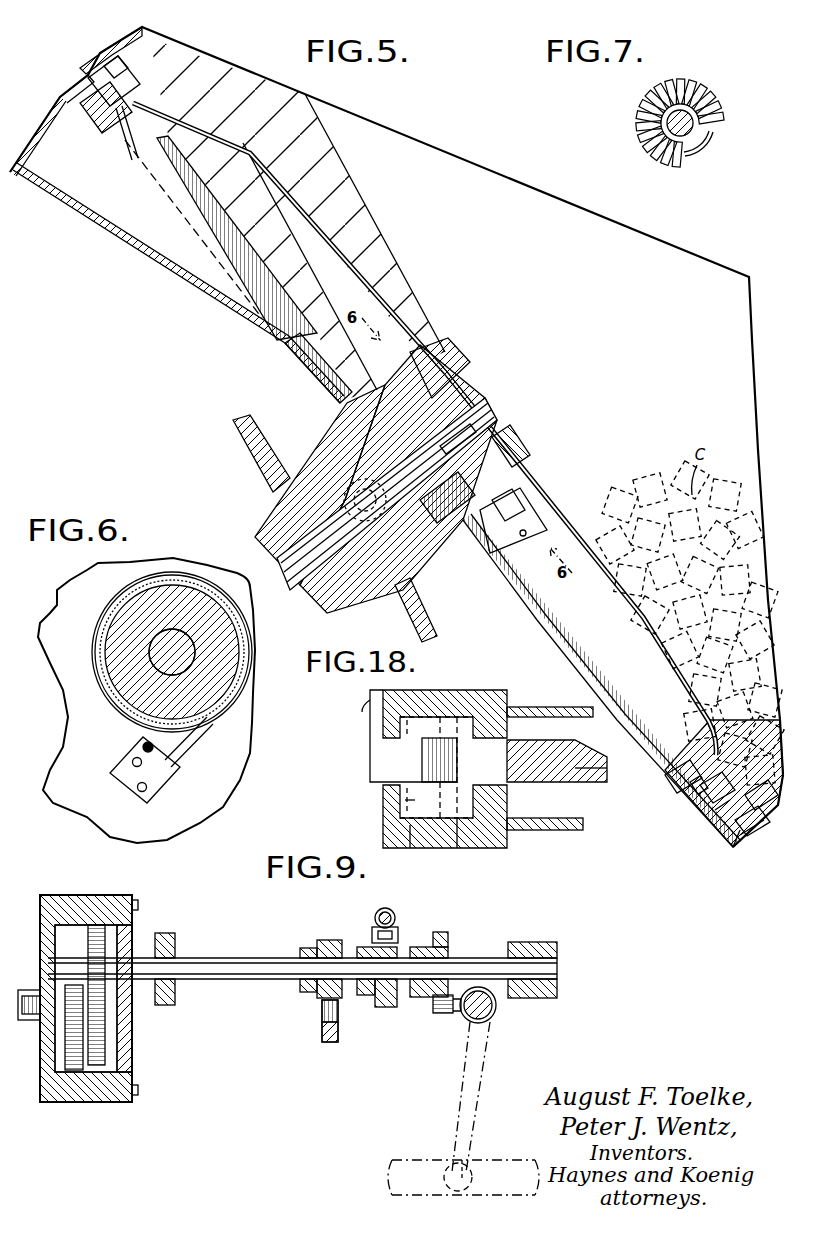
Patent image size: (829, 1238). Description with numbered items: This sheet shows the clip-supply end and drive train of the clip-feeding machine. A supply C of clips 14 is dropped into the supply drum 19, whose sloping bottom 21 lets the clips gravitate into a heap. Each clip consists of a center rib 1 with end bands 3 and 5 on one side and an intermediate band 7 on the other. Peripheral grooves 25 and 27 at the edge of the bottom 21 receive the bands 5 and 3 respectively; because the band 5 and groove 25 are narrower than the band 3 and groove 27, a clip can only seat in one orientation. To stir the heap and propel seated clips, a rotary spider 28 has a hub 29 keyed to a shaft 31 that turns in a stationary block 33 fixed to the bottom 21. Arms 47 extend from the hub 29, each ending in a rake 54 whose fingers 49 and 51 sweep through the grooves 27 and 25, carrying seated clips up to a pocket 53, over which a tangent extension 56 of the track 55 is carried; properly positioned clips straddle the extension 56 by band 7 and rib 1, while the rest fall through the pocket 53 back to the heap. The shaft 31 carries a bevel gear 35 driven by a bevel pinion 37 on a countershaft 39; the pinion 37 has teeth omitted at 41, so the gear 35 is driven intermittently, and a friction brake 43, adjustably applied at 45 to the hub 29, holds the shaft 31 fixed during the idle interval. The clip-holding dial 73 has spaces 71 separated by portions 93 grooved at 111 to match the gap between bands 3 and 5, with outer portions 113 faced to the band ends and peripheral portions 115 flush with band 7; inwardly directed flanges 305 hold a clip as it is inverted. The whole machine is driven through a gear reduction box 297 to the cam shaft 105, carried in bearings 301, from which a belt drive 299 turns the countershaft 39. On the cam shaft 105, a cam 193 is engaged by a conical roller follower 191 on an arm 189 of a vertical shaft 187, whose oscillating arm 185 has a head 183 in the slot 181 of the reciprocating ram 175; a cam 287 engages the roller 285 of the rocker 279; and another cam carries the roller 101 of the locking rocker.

In FIG. 5, the center rib 1 is at (762, 830).
In FIG. 18, the center rib 1 is at (460, 840).
In FIG. 5, the end band 3 is at (690, 790).
In FIG. 18, the end band 3 is at (372, 706).
In FIG. 5, the end band 5 is at (755, 832).
In FIG. 18, the end band 5 is at (410, 835).
In FIG. 5, the intermediate band 7 is at (765, 812).
In FIG. 18, the intermediate band 7 is at (507, 798).
In FIG. 5, the clips 14 is at (738, 852).
In FIG. 18, the clips 14 is at (415, 805).
In FIG. 5, the supply drum 19 is at (628, 246).
In FIG. 5, the sloping bottom 21 is at (548, 640).
In FIG. 5, the groove 25 is at (104, 136).
In FIG. 5, the groove 27 is at (80, 92).
In FIG. 5, the rotary spider 28 is at (415, 335).
In FIG. 5, the hub 29 is at (505, 440).
In FIG. 6, the hub 29 is at (120, 657).
In FIG. 5, the shaft 31 is at (478, 418).
In FIG. 6, the shaft 31 is at (157, 640).
In FIG. 5, the stationary block 33 is at (420, 558).
In FIG. 5, the bevel gear 35 is at (240, 420).
In FIG. 5, the bevel pinion 37 is at (320, 450).
In FIG. 7, the bevel pinion 37 is at (690, 82).
In FIG. 5, the countershaft 39 is at (357, 512).
In FIG. 7, the countershaft 39 is at (668, 124).
In FIG. 5, the omitted teeth 41 is at (365, 500).
In FIG. 7, the omitted teeth 41 is at (709, 160).
In FIG. 6, the friction brake 43 is at (167, 575).
In FIG. 5, the brake adjustment 45 is at (500, 510).
In FIG. 6, the brake adjustment 45 is at (170, 752).
In FIG. 5, the arms 47 is at (360, 288).
In FIG. 5, the finger 49 is at (100, 64).
In FIG. 5, the finger 51 is at (130, 160).
In FIG. 5, the pocket 53 is at (183, 268).
In FIG. 5, the rake 54 is at (102, 62).
In FIG. 5, the track 55 is at (715, 820).
In FIG. 5, the tangent extension 56 is at (118, 60).
In FIG. 18, the spaces 71 is at (520, 752).
In FIG. 18, the dial 73 is at (580, 772).
In FIG. 18, the dial portions 93 is at (435, 830).
In FIG. 9, the roller 101 is at (374, 926).
In FIG. 9, the cam shaft 105 is at (246, 965).
In FIG. 18, the groove 111 is at (457, 760).
In FIG. 18, the outer portions 113 is at (460, 700).
In FIG. 18, the peripheral portions 115 is at (512, 712).
In FIG. 9, the reciprocating ram 175 is at (500, 1167).
In FIG. 9, the slot 181 is at (445, 1165).
In FIG. 9, the head 183 is at (470, 1160).
In FIG. 9, the oscillating arm 185 is at (488, 1068).
In FIG. 9, the vertical shaft 187 is at (496, 1007).
In FIG. 9, the arm 189 is at (461, 1012).
In FIG. 9, the conical roller follower 191 is at (442, 1013).
In FIG. 9, the cam 193 is at (442, 935).
In FIG. 9, the rocker 279 is at (327, 1042).
In FIG. 9, the roller 285 is at (322, 1023).
In FIG. 9, the cam 287 is at (325, 940).
In FIG. 9, the gear reduction box 297 is at (136, 1060).
In FIG. 9, the belt drive 299 is at (165, 1006).
In FIG. 9, the bearings 301 is at (136, 950).
In FIG. 18, the inwardly directed flanges 305 is at (392, 728).